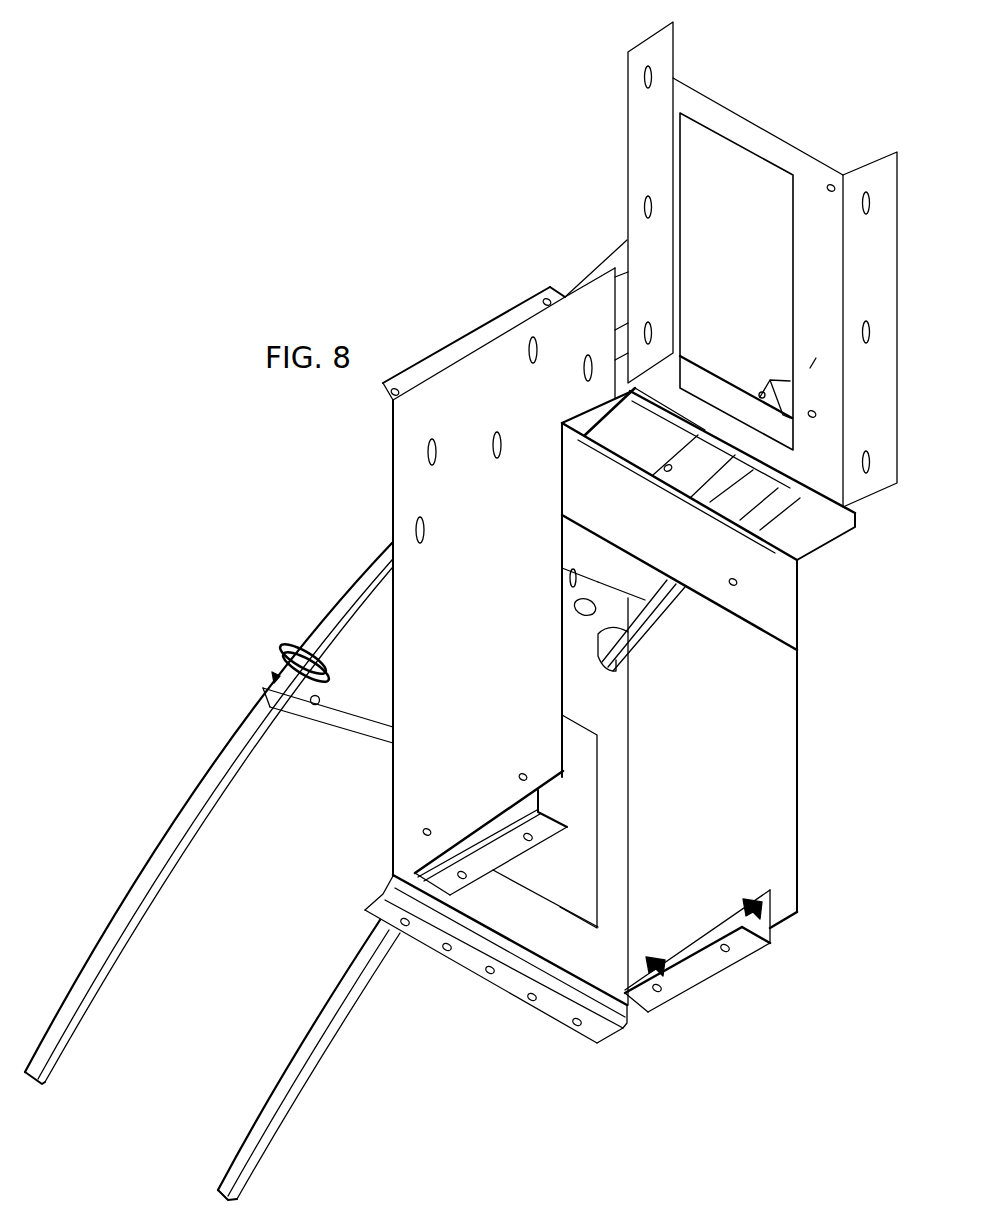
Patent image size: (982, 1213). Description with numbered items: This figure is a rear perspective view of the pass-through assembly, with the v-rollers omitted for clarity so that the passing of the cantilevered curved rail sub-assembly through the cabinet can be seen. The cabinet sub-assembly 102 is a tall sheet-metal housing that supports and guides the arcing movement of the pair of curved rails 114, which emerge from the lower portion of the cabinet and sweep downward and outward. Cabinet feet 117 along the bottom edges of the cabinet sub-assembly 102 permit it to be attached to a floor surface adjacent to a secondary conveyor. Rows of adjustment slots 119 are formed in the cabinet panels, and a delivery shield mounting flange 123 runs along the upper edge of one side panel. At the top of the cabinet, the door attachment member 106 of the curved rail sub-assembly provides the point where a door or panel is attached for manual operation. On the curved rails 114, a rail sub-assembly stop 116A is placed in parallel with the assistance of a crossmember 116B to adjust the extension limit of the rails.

The cabinet sub-assembly 102 is at (818, 750).
The door attachment member 106 is at (642, 126).
The curved rail 114 is at (208, 790).
The rail sub-assembly stop 116A is at (291, 648).
The crossmember 116B is at (377, 742).
The cabinet feet 117 is at (452, 887).
The adjustment slots 119 is at (494, 432).
The delivery shield mounting flange 123 is at (490, 318).